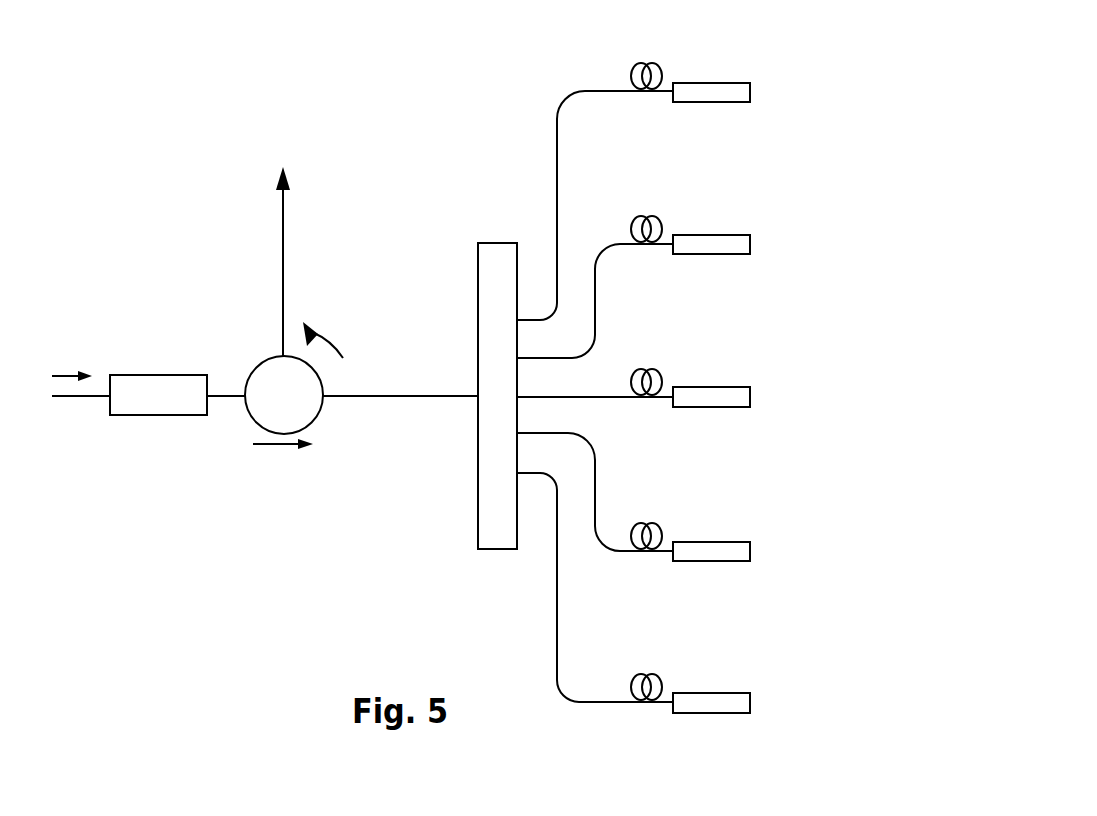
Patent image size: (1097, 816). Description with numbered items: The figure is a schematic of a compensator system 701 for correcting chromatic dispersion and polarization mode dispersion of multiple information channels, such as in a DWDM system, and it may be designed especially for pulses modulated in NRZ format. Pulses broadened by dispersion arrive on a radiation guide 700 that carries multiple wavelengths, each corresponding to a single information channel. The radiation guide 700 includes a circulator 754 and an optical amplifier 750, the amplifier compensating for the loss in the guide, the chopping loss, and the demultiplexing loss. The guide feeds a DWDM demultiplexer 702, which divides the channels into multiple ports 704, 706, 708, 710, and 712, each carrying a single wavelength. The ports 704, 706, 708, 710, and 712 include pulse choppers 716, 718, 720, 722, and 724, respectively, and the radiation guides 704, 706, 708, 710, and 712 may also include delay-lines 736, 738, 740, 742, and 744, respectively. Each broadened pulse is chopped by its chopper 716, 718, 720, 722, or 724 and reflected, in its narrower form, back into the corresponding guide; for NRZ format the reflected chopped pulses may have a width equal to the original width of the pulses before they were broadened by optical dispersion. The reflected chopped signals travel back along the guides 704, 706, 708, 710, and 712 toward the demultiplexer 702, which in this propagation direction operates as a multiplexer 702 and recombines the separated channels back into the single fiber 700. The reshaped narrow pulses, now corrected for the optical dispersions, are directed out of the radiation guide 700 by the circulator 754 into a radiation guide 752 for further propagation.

The radiation guide 700 is at (440, 393).
The compensator system 701 is at (800, 312).
The DWDM demultiplexer 702 is at (500, 243).
The port 704 is at (557, 168).
The port 706 is at (595, 320).
The port 708 is at (585, 397).
The port 710 is at (595, 470).
The port 712 is at (557, 595).
The pulse chopper 716 is at (712, 83).
The pulse chopper 718 is at (712, 235).
The pulse chopper 720 is at (712, 387).
The pulse chopper 722 is at (720, 542).
The pulse chopper 724 is at (712, 693).
The delay-line 736 is at (652, 62).
The delay-line 738 is at (652, 215).
The delay-line 740 is at (652, 368).
The delay-line 742 is at (652, 522).
The delay-line 744 is at (652, 673).
The optical amplifier 750 is at (170, 388).
The radiation guide 752 is at (283, 234).
The circulator 754 is at (277, 385).